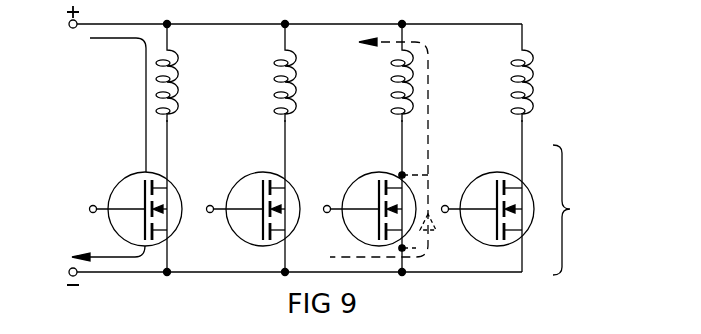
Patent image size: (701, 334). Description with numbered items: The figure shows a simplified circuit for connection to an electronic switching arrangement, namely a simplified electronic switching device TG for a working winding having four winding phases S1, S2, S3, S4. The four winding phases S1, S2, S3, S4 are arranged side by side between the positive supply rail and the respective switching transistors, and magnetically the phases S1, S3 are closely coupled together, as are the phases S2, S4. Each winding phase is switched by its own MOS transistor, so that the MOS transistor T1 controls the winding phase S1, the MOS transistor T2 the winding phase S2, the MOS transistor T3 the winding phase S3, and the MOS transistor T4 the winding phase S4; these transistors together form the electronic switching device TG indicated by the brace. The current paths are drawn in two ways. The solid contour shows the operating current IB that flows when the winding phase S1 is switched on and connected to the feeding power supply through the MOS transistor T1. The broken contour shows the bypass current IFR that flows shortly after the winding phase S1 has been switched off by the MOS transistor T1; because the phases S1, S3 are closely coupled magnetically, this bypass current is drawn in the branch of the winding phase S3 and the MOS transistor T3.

The MOS transistor T1 is at (137, 174).
The MOS transistor T2 is at (256, 174).
The MOS transistor T3 is at (373, 174).
The MOS transistor T4 is at (491, 174).
The winding phase S1 is at (179, 85).
The winding phase S2 is at (297, 85).
The winding phase S3 is at (414, 85).
The winding phase S4 is at (534, 85).
The electronic switching device TG is at (580, 210).
The operating current IB is at (108, 245).
The bypass current IFR is at (383, 147).